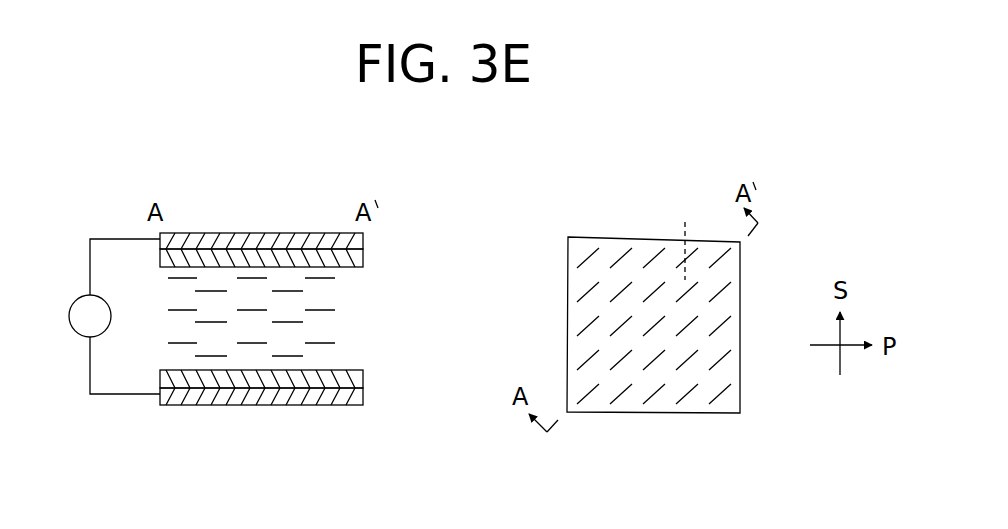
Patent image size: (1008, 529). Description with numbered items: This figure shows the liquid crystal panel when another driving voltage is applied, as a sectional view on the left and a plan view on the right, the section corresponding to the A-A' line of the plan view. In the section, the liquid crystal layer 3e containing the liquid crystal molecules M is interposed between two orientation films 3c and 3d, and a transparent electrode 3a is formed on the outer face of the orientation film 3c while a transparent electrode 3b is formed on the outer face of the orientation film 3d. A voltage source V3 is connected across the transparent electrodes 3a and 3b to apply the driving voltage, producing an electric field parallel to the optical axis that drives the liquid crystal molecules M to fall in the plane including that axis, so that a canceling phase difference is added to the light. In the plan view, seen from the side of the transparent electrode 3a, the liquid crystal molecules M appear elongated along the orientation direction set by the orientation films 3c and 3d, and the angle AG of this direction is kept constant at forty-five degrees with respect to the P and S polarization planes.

The transparent electrode 3a is at (363, 242).
The transparent electrode 3b is at (363, 398).
The orientation film 3c is at (363, 262).
The orientation film 3d is at (363, 376).
The liquid crystal layer 3e is at (157, 272).
The liquid crystal molecules M is at (340, 283).
The angle AG is at (692, 253).
The voltage source V3 is at (114, 316).